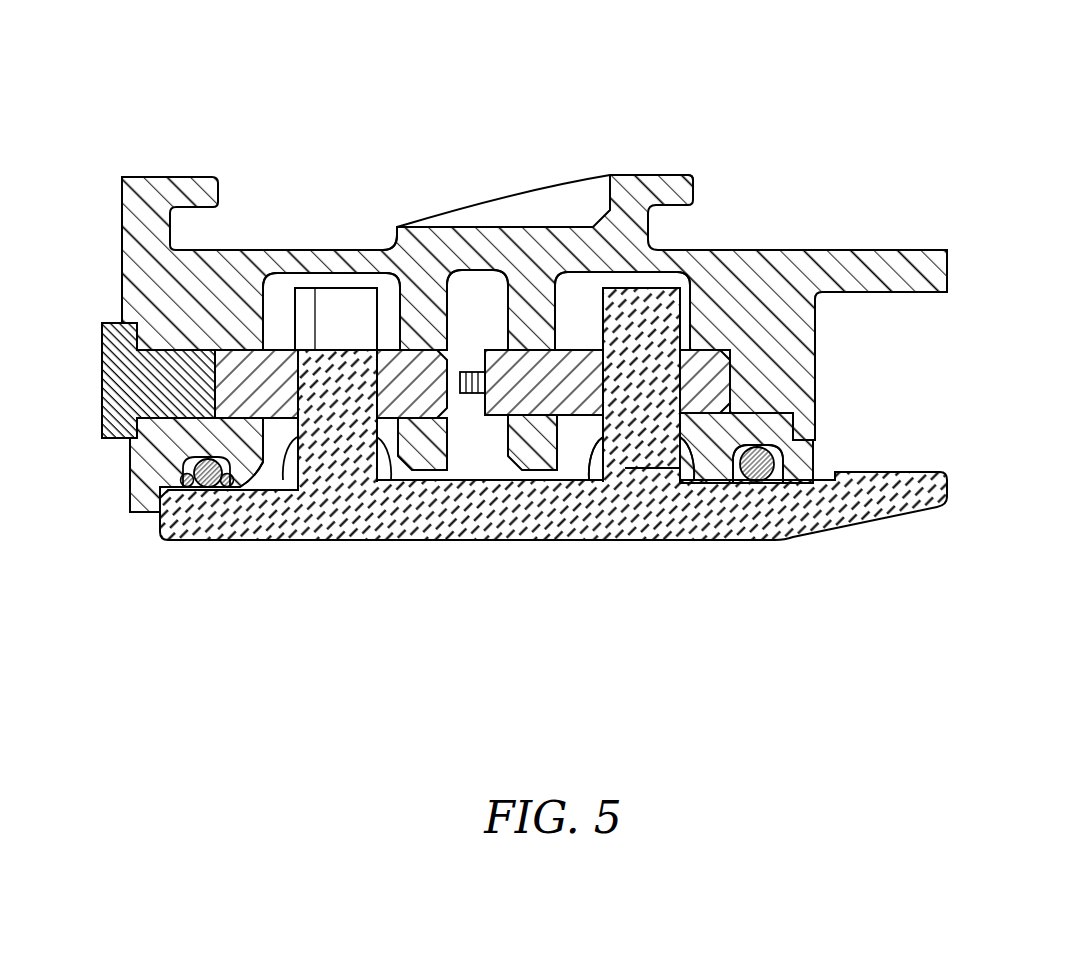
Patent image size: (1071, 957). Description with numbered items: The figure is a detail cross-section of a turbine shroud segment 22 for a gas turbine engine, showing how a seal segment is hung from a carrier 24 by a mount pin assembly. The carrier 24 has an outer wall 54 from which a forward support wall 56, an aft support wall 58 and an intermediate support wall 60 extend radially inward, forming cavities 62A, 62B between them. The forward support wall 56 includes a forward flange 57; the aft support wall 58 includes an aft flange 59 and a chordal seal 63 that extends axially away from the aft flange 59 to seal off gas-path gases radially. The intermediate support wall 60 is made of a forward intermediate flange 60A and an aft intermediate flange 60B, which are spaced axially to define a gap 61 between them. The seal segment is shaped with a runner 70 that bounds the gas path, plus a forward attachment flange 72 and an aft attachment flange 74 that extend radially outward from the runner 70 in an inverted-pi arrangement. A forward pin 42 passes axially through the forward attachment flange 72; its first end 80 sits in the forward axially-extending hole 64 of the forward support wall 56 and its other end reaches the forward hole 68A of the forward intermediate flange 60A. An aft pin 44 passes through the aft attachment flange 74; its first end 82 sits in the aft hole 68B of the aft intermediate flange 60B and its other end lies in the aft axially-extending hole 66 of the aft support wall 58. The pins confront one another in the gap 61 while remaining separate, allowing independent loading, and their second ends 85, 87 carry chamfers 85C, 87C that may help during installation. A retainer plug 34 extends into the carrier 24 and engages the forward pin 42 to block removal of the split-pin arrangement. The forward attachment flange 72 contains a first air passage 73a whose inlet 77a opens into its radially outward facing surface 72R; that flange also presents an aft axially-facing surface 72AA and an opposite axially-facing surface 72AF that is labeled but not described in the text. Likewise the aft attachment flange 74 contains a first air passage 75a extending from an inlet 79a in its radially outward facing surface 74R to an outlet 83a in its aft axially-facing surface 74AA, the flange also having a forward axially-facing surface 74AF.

The turbine shroud segment 22 is at (187, 98).
The carrier 24 is at (771, 163).
The retainer plug 34 is at (120, 365).
The forward pin 42 is at (207, 489).
The aft pin 44 is at (777, 470).
The outer wall 54 is at (340, 286).
The forward support wall 56 is at (120, 268).
The forward flange 57 is at (130, 482).
The aft support wall 58 is at (828, 466).
The aft flange 59 is at (808, 466).
The intermediate support wall 60 is at (571, 286).
The forward intermediate flange 60A is at (408, 300).
The aft intermediate flange 60B is at (527, 310).
The gap 61 is at (480, 300).
The cavity 62A is at (338, 225).
The cavity 62B is at (638, 268).
The chordal seal 63 is at (656, 456).
The forward axially-extending hole 64 is at (275, 342).
The aft axially-extending hole 66 is at (701, 390).
The forward hole 68A is at (383, 248).
The aft hole 68B is at (571, 332).
The runner 70 is at (437, 548).
The forward attachment flange 72 is at (262, 470).
The radially outward facing surface 72R is at (338, 268).
The aft axially-facing surface 72AA is at (395, 430).
The first fastener flange 72AF is at (282, 432).
The first air passage 73a is at (317, 407).
The aft attachment flange 74 is at (612, 468).
The radially outward facing surface 74R is at (685, 331).
The aft axially-facing surface 74AA is at (735, 421).
The forward axially-facing surface 74AF is at (592, 456).
The first air passage 75a is at (630, 470).
The inlet 77a is at (334, 347).
The inlet 79a is at (627, 268).
The end of forward pin 80 is at (213, 397).
The end of aft pin 82 is at (503, 404).
The outlet 83a is at (675, 470).
The second end of pin 85 is at (466, 370).
The chamfer 85C is at (467, 542).
The second end of pin 87 is at (714, 372).
The chamfer 87C is at (738, 424).